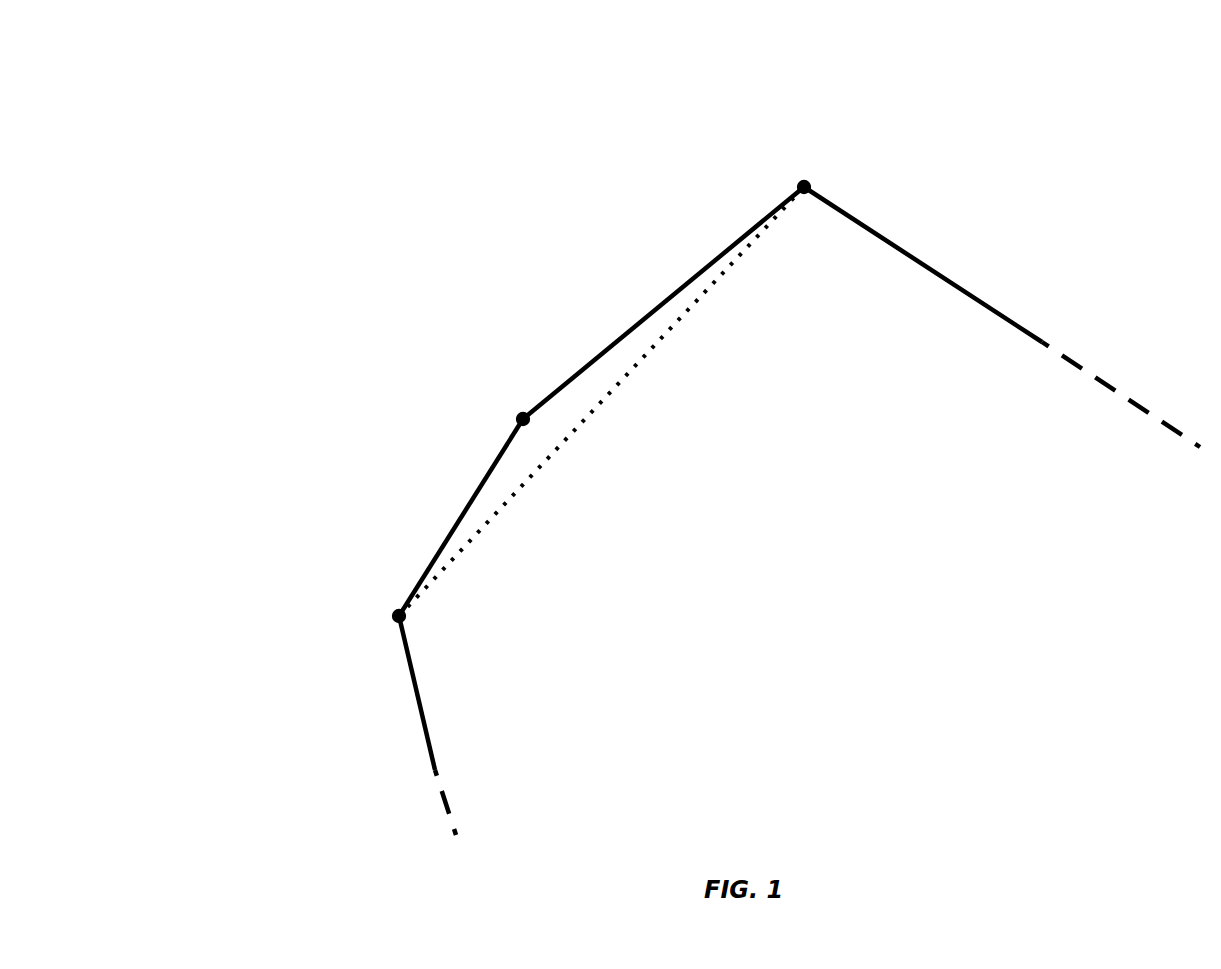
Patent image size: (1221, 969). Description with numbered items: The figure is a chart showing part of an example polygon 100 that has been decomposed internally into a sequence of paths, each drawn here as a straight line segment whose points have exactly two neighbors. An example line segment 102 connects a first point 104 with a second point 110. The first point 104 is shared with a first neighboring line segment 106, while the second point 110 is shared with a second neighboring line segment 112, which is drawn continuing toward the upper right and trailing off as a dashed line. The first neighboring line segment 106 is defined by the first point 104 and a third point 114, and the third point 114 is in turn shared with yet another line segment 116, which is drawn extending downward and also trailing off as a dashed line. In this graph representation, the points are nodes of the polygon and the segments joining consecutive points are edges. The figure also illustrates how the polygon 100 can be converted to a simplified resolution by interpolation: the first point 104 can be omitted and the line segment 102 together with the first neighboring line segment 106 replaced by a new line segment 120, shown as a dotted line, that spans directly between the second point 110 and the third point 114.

The polygon 100 is at (263, 100).
The line segment 102 is at (632, 325).
The first point 104 is at (516, 418).
The first neighboring line segment 106 is at (418, 582).
The second point 110 is at (797, 187).
The second neighboring line segment 112 is at (930, 270).
The third point 114 is at (390, 618).
The line segment 116 is at (423, 745).
The new line segment 120 is at (598, 405).